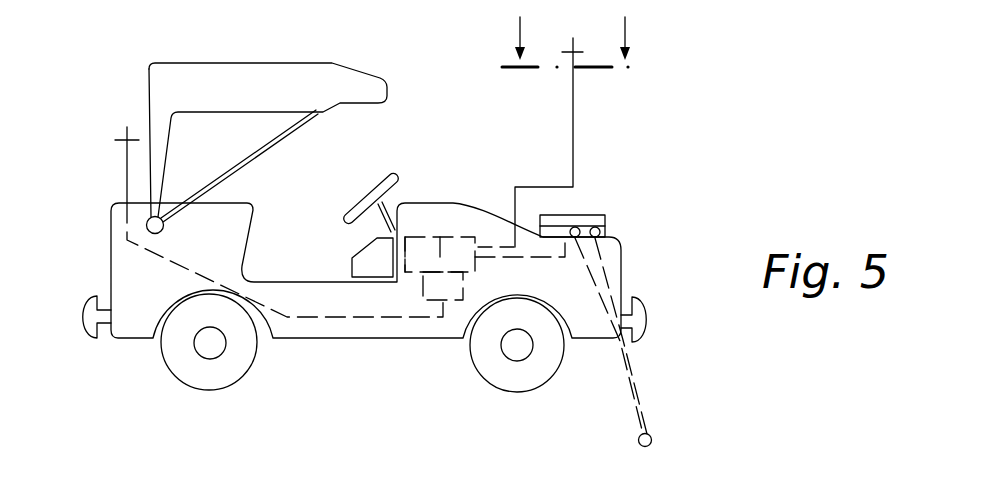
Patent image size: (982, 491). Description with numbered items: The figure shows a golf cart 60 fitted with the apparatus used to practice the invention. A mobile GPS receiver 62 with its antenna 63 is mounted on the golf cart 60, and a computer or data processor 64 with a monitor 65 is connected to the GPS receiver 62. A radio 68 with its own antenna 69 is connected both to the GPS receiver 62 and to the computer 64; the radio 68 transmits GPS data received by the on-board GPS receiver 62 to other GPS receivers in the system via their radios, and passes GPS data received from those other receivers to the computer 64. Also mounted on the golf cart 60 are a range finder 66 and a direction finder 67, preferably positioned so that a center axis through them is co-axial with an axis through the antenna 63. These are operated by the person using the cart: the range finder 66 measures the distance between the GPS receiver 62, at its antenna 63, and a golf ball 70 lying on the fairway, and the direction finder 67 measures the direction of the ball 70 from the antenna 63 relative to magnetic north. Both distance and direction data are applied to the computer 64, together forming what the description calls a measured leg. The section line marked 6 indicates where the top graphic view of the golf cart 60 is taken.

The section line 6— 6 is at (570, 50).
The golf cart 60 is at (128, 317).
The mobile GPS receiver 62 is at (460, 237).
The antenna 63 is at (573, 122).
The computer 64 is at (422, 258).
The monitor 65 is at (357, 253).
The range finder 66 is at (605, 232).
The direction finder 67 is at (593, 217).
The radio 68 is at (455, 293).
The antenna 69 is at (127, 165).
The golf ball 70 is at (653, 438).